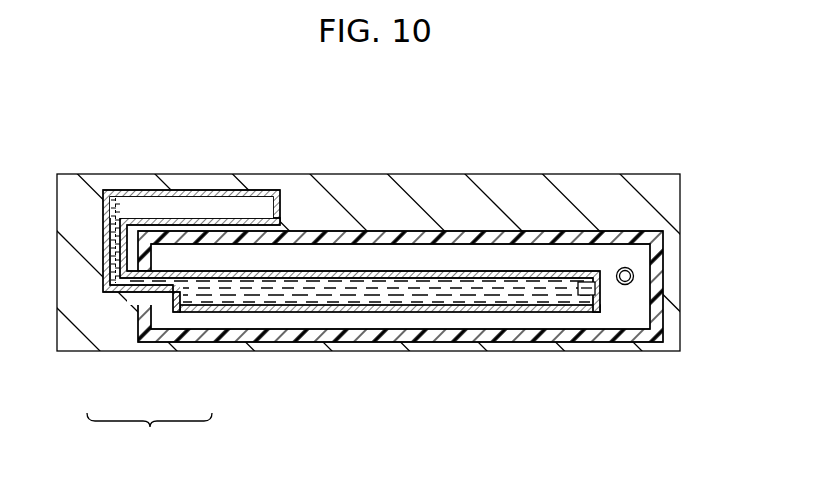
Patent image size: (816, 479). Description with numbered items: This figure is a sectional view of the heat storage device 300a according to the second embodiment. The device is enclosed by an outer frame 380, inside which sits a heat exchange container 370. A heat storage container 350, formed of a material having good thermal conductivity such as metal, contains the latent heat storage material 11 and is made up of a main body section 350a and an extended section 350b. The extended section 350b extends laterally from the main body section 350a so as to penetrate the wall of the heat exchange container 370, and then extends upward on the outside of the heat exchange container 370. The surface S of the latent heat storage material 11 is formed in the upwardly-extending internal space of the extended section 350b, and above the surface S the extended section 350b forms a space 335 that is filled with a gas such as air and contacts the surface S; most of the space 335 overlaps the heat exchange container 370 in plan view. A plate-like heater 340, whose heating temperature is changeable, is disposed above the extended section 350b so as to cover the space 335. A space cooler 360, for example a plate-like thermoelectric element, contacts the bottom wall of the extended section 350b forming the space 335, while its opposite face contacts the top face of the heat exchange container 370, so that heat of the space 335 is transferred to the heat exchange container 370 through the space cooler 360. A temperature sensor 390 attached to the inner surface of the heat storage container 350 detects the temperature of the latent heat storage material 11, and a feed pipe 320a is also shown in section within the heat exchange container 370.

The heat storage device 300a is at (517, 78).
The outer frame 380 is at (368, 186).
The heat exchange container 370 is at (288, 338).
The latent heat storage material 11 is at (383, 307).
The heater 340 is at (159, 192).
The space cooler 360 is at (211, 227).
The space 335 is at (257, 205).
The surface S is at (114, 200).
The extended section 350b is at (105, 272).
The main body section 350a is at (186, 310).
The heat storage container 350 is at (149, 432).
The temperature sensor 390 is at (585, 290).
The feed pipe 320a is at (627, 285).